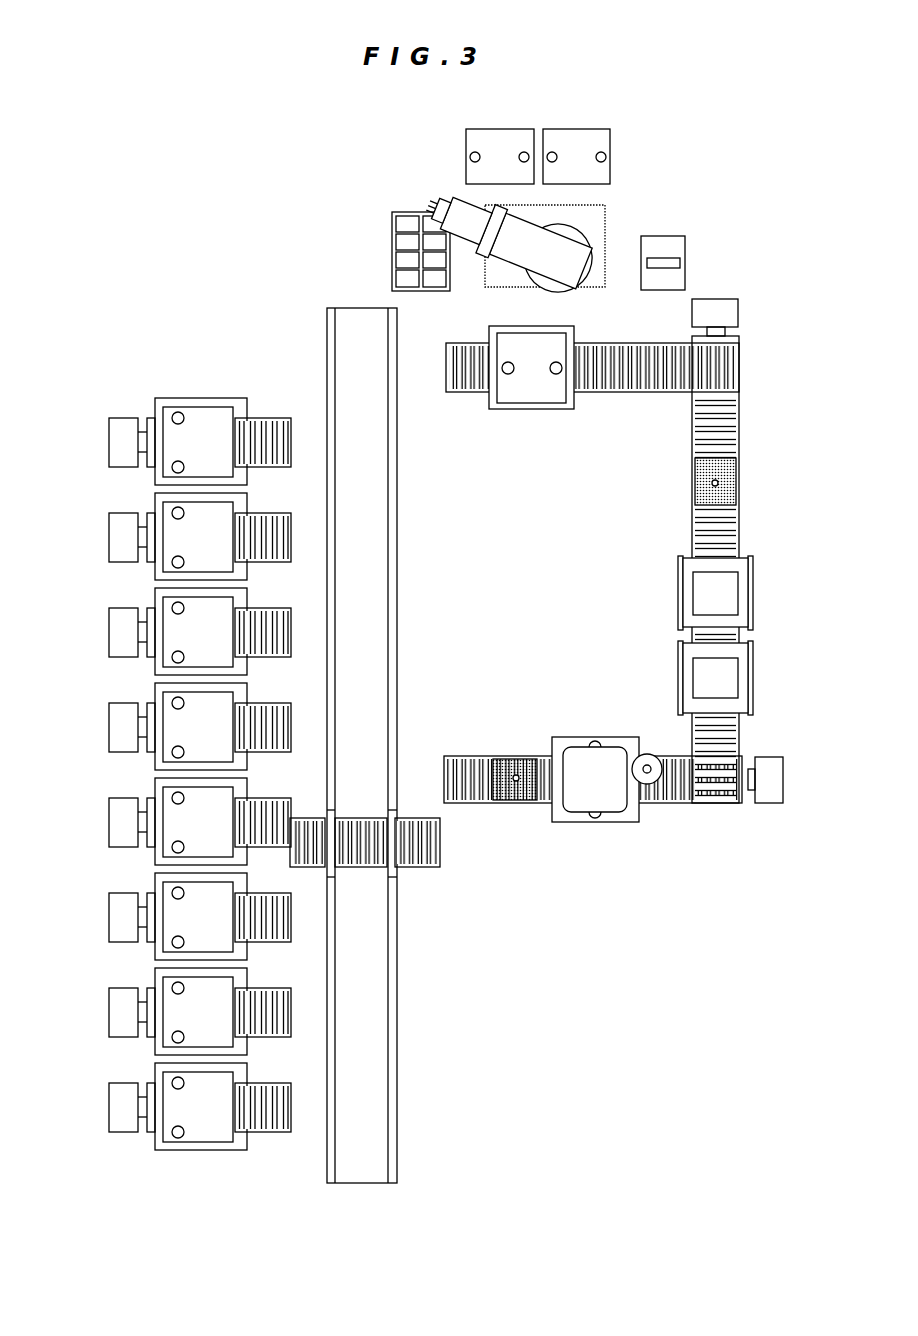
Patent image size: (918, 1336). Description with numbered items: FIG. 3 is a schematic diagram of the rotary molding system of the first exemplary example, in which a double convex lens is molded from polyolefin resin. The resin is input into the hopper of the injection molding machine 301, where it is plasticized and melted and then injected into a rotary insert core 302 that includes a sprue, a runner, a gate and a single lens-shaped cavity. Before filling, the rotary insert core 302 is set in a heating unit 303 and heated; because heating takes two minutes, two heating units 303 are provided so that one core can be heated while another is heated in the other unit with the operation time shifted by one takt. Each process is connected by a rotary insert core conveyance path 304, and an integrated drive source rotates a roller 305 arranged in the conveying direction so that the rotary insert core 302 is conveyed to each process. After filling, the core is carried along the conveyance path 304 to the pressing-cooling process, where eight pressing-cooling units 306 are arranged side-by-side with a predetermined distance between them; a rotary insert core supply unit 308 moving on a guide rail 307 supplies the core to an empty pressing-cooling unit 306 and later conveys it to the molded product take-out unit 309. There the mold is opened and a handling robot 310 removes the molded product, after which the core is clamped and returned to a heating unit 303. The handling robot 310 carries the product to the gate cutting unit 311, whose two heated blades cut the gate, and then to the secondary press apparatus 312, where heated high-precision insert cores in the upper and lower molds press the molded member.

The injection molding machine 301 is at (583, 807).
The rotary insert core 302 is at (740, 480).
The heating unit 303 is at (732, 594).
The rotary insert core conveyance path 304 is at (613, 395).
The roller 305 is at (740, 432).
The pressing-cooling unit 306 is at (173, 442).
The guide rail 307 is at (380, 594).
The rotary insert core supply unit 308 is at (360, 867).
The molded product take-out unit 309 is at (530, 410).
The handling robot 310 is at (431, 208).
The gate cutting unit 311 is at (688, 262).
The secondary press apparatus 312 is at (596, 112).